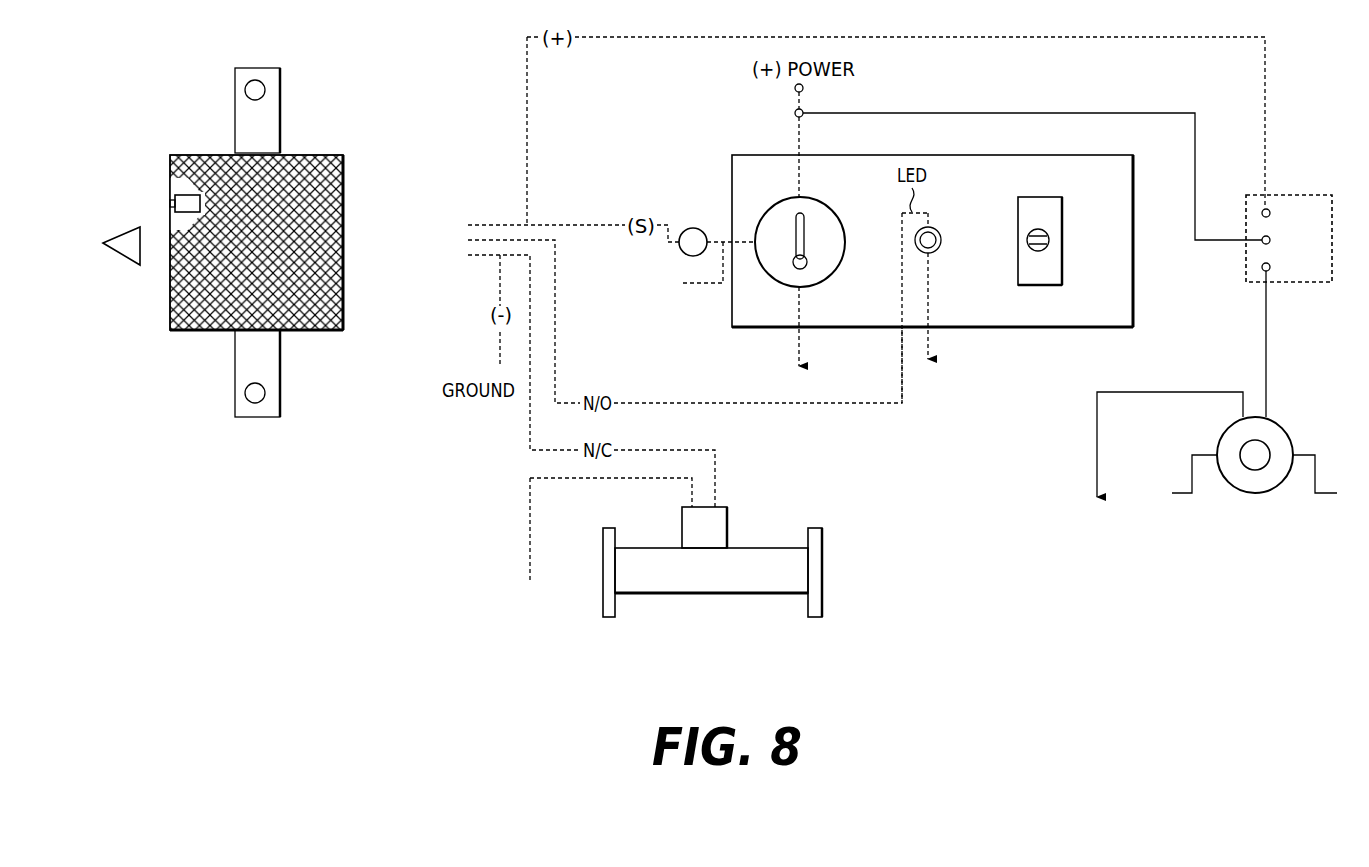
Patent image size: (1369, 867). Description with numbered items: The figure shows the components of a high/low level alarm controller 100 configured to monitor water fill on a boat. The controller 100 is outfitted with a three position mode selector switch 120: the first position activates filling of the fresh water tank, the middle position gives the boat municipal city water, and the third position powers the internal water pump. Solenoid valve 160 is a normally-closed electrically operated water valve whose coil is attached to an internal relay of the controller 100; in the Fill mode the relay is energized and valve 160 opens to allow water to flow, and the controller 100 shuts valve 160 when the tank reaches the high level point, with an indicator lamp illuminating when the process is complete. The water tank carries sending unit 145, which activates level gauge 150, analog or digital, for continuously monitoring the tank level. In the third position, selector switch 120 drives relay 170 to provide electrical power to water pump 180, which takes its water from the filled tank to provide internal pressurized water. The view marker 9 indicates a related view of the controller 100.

The high/low level alarm controller 100 is at (343, 198).
The view indicator 9 is at (121, 246).
The sending unit 145 is at (656, 289).
The level gauge 150 is at (826, 200).
The three position mode selector switch 120 is at (1037, 197).
The relay 170 is at (1305, 195).
The water pump 180 is at (1284, 425).
The solenoid valve 160 is at (690, 594).